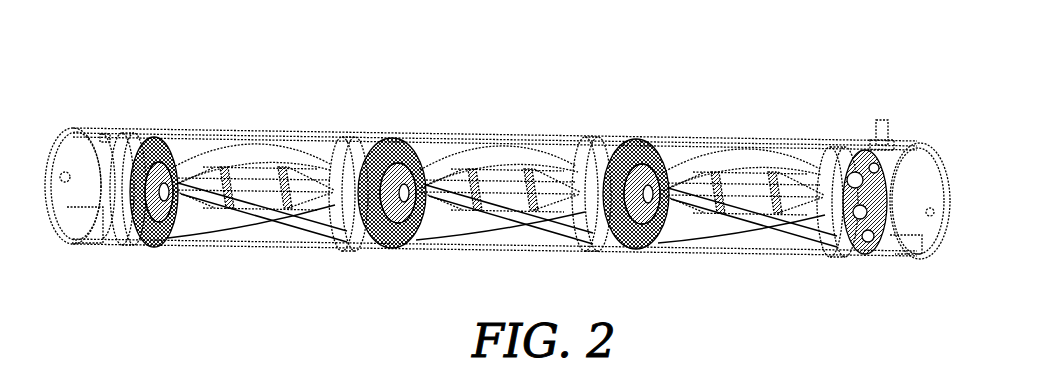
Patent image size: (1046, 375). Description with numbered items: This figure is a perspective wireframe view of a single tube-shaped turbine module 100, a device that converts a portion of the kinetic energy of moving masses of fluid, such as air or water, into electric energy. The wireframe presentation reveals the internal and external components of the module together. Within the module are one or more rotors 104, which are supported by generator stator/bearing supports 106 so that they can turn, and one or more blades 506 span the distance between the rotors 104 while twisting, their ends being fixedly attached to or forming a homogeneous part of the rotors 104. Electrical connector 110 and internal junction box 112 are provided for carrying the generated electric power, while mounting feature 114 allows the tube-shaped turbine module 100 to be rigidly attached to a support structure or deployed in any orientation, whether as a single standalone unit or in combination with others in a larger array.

The tube-shaped turbine module 100 is at (792, 81).
The rotors 104 is at (138, 236).
The generator stator/bearing supports 106 is at (358, 245).
The electrical connector 110 is at (876, 240).
The internal junction box 112 is at (360, 142).
The mounting feature 114 is at (68, 183).
The blades 506 is at (227, 156).